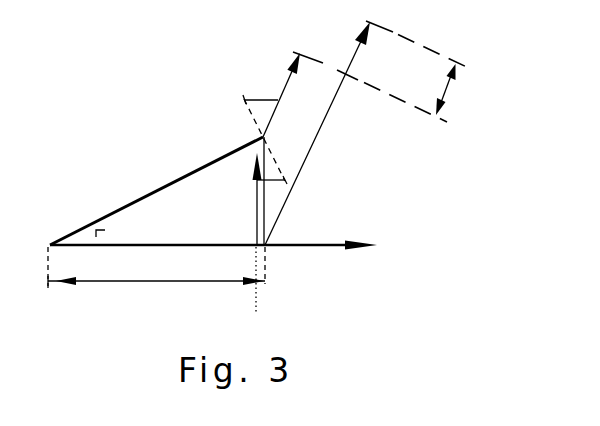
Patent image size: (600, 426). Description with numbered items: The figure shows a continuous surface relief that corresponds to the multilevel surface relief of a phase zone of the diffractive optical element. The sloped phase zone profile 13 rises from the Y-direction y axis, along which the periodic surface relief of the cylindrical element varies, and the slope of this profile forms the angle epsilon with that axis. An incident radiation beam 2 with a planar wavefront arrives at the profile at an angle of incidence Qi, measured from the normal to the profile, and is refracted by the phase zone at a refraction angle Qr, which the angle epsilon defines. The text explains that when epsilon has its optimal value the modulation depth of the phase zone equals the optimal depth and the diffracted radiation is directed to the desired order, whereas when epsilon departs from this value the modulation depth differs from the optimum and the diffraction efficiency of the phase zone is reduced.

The phase zone profile 13 is at (175, 177).
The incident radiation beam 2 is at (257, 250).
The Y-direction y is at (221, 249).
The refraction angle θr Qr is at (273, 100).
The angle of incidence θi Qi is at (269, 184).